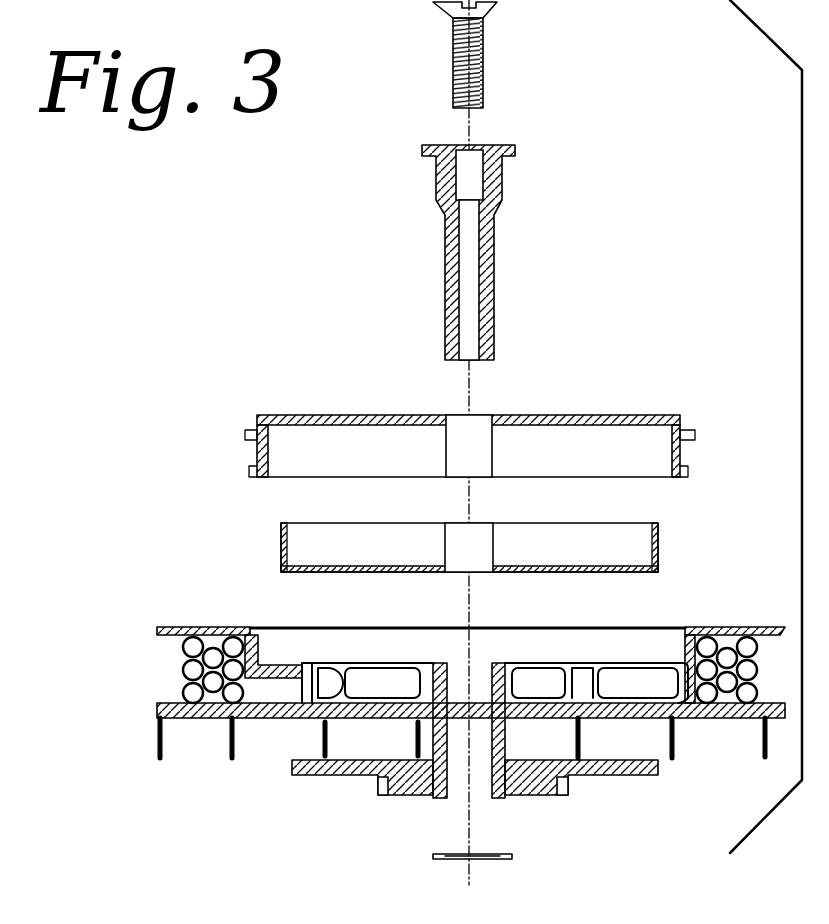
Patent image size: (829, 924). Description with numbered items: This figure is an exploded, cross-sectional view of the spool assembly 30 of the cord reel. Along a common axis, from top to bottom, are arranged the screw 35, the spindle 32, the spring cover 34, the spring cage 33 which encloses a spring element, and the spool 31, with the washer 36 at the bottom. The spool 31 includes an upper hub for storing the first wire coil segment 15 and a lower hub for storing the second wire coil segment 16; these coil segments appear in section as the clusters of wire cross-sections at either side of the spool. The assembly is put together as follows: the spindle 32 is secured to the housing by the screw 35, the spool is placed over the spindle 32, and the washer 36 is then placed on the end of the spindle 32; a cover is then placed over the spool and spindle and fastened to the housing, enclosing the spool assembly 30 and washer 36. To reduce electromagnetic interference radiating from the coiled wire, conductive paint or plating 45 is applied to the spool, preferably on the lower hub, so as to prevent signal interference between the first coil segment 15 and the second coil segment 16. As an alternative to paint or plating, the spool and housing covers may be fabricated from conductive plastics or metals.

The spool assembly 30 is at (676, 157).
The screw 35 is at (453, 70).
The spindle 32 is at (443, 262).
The spring cover 34 is at (280, 415).
The spring cage 33 is at (281, 542).
The spool 31 is at (170, 627).
The second wire coil segment 16 is at (183, 672).
The first wire coil segment 15 is at (157, 745).
The conductive paint or plating 45 is at (266, 720).
The washer 36 is at (433, 856).